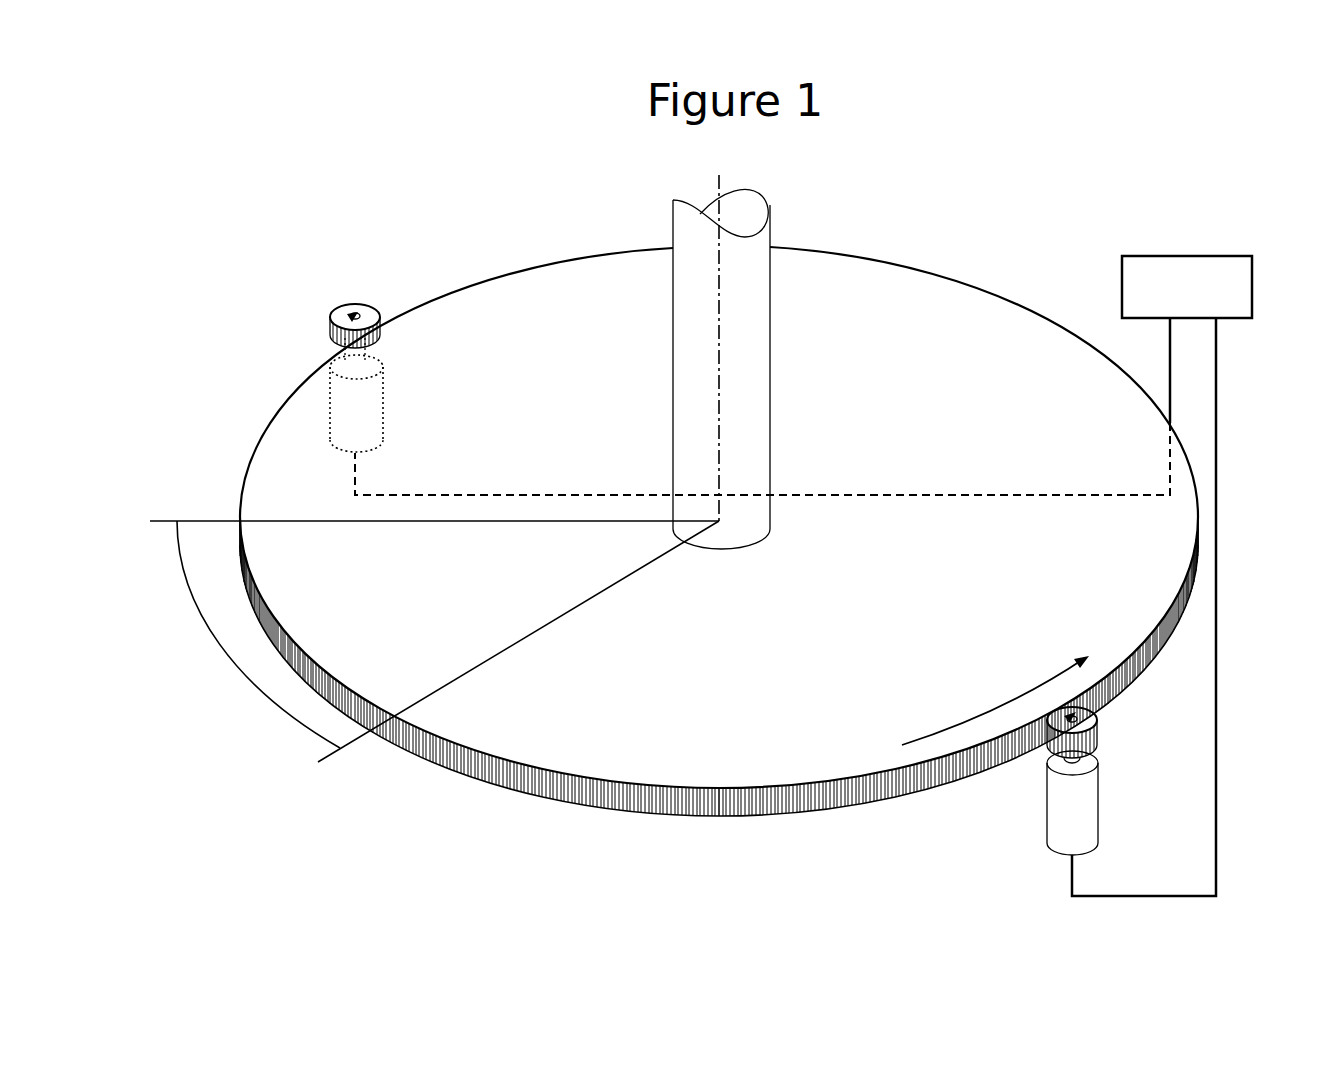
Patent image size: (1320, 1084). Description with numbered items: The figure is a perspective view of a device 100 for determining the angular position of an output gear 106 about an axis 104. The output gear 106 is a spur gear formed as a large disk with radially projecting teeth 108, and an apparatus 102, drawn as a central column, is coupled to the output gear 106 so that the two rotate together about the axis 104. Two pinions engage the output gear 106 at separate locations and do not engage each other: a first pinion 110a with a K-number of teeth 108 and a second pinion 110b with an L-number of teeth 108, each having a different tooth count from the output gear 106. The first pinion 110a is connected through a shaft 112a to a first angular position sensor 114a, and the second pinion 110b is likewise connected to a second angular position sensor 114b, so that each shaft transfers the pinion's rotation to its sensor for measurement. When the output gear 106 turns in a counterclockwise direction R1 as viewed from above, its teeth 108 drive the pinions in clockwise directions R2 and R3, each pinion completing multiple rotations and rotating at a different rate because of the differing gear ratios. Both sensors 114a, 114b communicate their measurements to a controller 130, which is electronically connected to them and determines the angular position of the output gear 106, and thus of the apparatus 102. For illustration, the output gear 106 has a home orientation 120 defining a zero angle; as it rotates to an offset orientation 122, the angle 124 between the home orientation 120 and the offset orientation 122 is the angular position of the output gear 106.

The device 100 is at (440, 218).
The apparatus 102 is at (765, 228).
The axis 104 is at (722, 177).
The output gear 106 is at (1015, 304).
The teeth 108 is at (910, 264).
The first pinion 110a is at (1097, 722).
The second pinion 110b is at (343, 311).
The shaft 112a is at (1098, 756).
The first angular position sensor 114a is at (1098, 810).
The second angular position sensor 114b is at (385, 400).
The home orientation 120 is at (165, 521).
The offset orientation 122 is at (328, 750).
The angle 124 is at (272, 697).
The controller 130 is at (1195, 256).
The counterclockwise direction R1 is at (988, 712).
The clockwise direction R2 is at (1075, 713).
The clockwise direction R3 is at (375, 325).